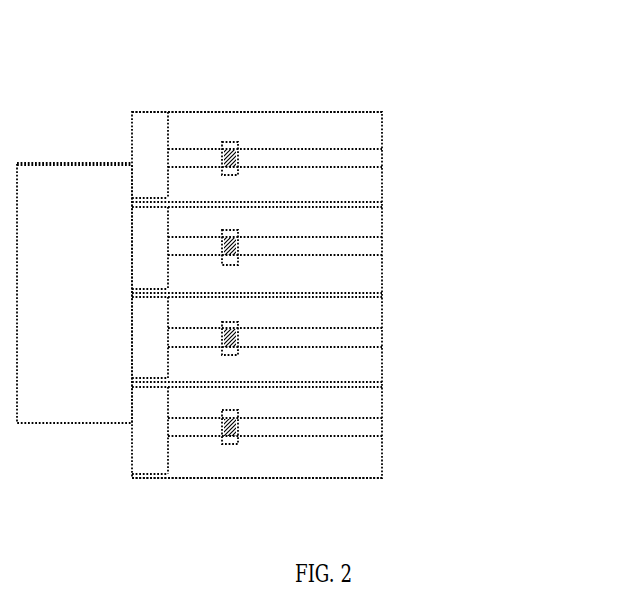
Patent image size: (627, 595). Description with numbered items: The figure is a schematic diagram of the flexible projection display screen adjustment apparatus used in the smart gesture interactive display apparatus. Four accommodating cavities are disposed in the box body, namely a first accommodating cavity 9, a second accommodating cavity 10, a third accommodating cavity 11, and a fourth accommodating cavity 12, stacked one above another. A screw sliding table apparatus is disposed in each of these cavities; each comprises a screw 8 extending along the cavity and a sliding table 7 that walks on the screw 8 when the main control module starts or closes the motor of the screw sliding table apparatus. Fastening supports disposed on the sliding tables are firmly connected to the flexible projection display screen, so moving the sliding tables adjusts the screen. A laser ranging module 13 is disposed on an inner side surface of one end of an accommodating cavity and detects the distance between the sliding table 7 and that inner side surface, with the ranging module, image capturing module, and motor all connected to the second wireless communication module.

The sliding table 7 is at (184, 87).
The screw 8 is at (299, 85).
The first accommodating cavity 9 is at (337, 118).
The second accommodating cavity 10 is at (349, 210).
The third accommodating cavity 11 is at (366, 298).
The fourth accommodating cavity 12 is at (379, 401).
The laser ranging module 13 is at (267, 332).